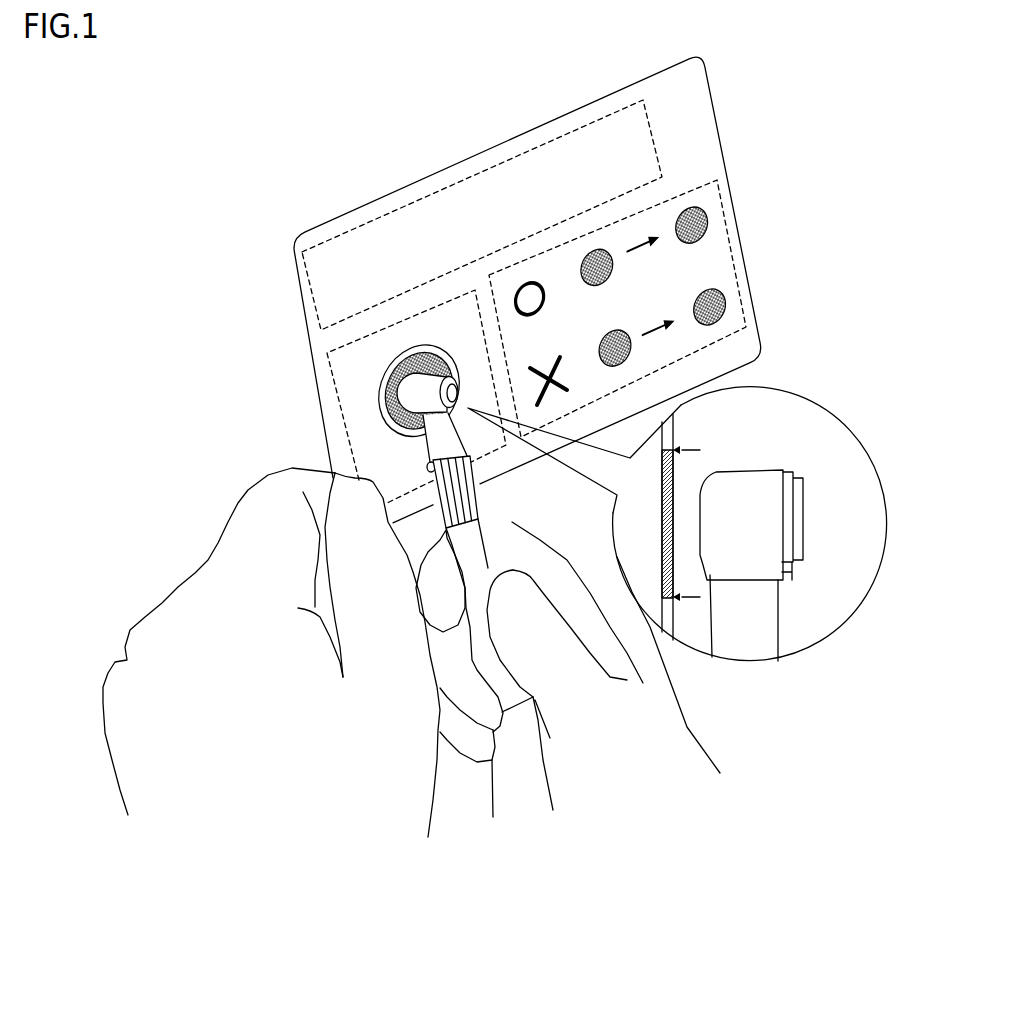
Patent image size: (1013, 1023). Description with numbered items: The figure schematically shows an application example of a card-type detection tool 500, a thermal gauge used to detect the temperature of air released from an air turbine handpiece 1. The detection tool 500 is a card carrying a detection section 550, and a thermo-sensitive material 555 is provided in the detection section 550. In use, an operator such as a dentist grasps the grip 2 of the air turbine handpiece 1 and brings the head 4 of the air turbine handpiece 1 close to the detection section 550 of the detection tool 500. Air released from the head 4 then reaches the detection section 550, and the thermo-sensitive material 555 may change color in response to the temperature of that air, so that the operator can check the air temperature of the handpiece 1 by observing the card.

The air turbine handpiece 1 is at (525, 797).
The grip 2 is at (472, 498).
The head 4 is at (417, 397).
The detection tool 500 is at (344, 186).
The detection section 550 is at (397, 362).
The thermo-sensitive material 555 is at (387, 418).